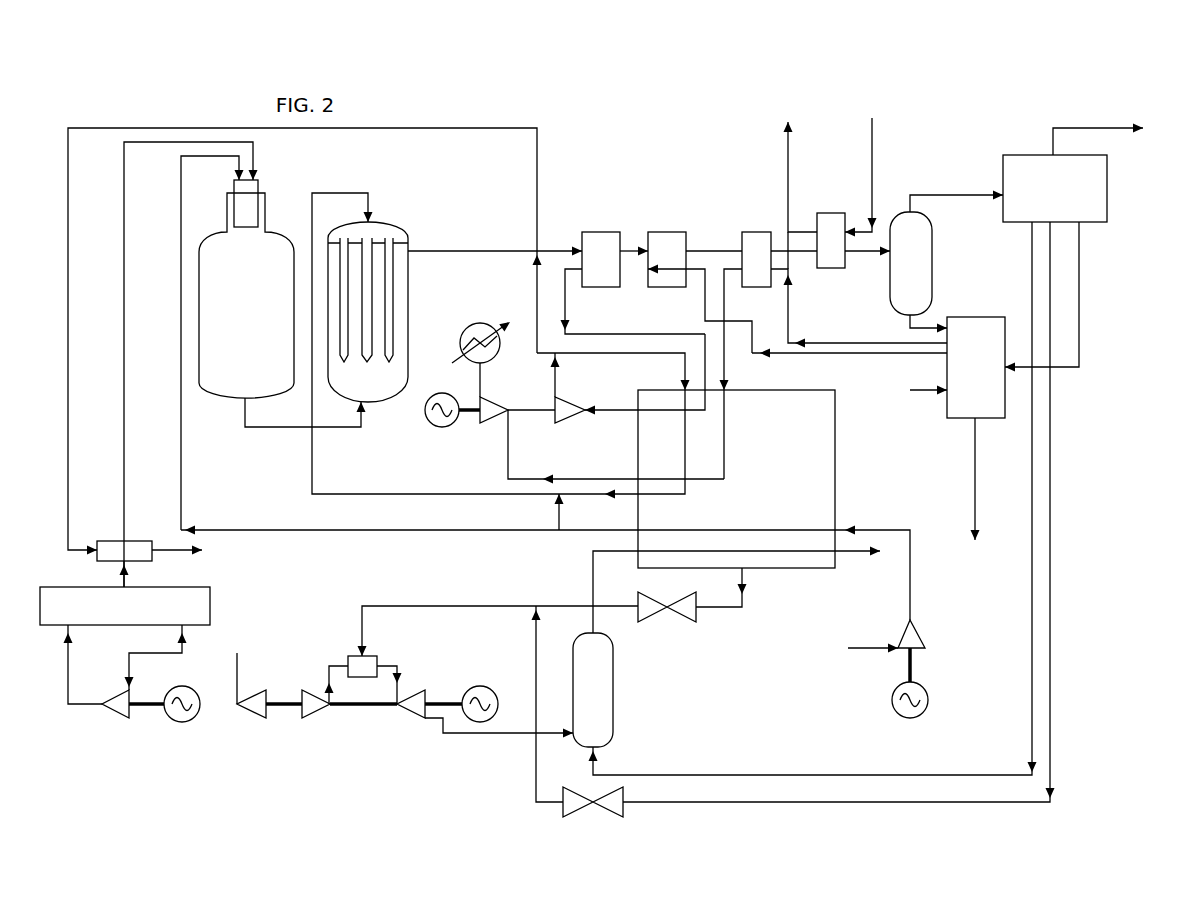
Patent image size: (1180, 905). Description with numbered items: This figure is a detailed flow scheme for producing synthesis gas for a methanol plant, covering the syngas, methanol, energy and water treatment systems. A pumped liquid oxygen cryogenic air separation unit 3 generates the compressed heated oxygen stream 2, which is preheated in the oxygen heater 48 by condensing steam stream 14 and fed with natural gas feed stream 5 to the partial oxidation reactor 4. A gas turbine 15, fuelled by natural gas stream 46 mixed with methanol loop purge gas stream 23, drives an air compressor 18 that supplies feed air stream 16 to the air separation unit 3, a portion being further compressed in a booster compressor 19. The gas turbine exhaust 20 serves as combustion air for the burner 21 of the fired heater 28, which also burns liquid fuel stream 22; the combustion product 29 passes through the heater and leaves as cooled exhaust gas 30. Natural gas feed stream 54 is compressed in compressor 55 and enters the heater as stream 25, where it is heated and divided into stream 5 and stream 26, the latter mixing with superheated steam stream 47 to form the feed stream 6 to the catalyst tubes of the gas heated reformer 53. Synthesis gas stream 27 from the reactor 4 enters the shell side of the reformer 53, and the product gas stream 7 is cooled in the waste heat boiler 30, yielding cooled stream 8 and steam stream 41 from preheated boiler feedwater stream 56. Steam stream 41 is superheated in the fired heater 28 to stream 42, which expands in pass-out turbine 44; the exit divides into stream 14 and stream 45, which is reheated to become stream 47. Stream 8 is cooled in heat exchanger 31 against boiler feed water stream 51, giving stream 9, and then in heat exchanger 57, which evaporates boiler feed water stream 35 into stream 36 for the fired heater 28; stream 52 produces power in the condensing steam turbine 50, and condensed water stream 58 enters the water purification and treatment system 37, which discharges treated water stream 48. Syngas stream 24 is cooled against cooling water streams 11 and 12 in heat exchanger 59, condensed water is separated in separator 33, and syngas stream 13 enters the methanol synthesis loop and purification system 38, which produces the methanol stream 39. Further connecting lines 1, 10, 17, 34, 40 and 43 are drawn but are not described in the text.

The feed line to separator 1 is at (122, 580).
The compressed heated oxygen stream 2 is at (124, 322).
The pumped liquid oxygen cryogenic air separation unit 3 is at (210, 607).
The partial oxidation reactor 4 is at (237, 329).
The natural gas feed stream 5 is at (183, 488).
The combined feed stream 6 is at (343, 193).
The product gas stream 7 is at (565, 250).
The cooled syngas stream 8 is at (628, 250).
The syngas stream 9 is at (700, 250).
The line to separator vessel 10 is at (867, 252).
The cooling water stream 11 is at (875, 150).
The heated cooling water stream 12 is at (788, 132).
The syngas stream 13 is at (960, 195).
The condensing steam stream 14 is at (175, 128).
The gas turbine 15 is at (362, 706).
The feed air stream 16 is at (185, 651).
The feed line 17 is at (78, 705).
The air compressor 18 is at (250, 715).
The booster compressor 19 is at (115, 715).
The gas turbine exhaust 20 is at (488, 735).
The fired heater burner 21 is at (582, 702).
The combustible liquid fuel stream 22 is at (812, 774).
The methanol loop purge gas stream 23 is at (828, 803).
The syngas stream 24 is at (788, 236).
The compressed natural gas stream 25 is at (886, 530).
The natural gas stream 26 is at (556, 512).
The synthesis gas stream 27 is at (280, 430).
The fired heater 28 is at (767, 474).
The combustion product 29 is at (600, 552).
The waste heat boiler 30 is at (598, 232).
The heat exchanger 31 is at (670, 232).
The water separator 33 is at (899, 275).
The liquid line 34 is at (930, 325).
The boiler feed water stream 35 is at (840, 342).
The evaporated boiler feed water stream 36 is at (726, 366).
The water purification and treatment system 37 is at (964, 377).
The methanol synthesis loop and purification system 38 is at (1042, 200).
The methanol product stream 39 is at (1093, 128).
The line to unit 40 is at (1080, 298).
The steam stream 41 is at (567, 305).
The superheated steam stream 42 is at (628, 414).
The compressor outlet line 43 is at (557, 368).
The pass-out turbine 44 is at (572, 420).
The steam stream 45 is at (610, 356).
The gas turbine fuel stream 46 is at (445, 607).
The superheated steam stream 47 is at (615, 498).
The oxygen heater 48 is at (118, 541).
The condensing steam turbine 50 is at (490, 398).
The boiler feed water stream 51 is at (863, 355).
The steam stream 52 is at (508, 450).
The gas heated catalytic reformer 53 is at (385, 223).
The natural gas feed stream 54 is at (870, 650).
The compressor 55 is at (918, 628).
The preheated boiler feedwater stream 56 is at (655, 275).
The heat exchanger 57 is at (756, 232).
The condensed water stream 58 is at (935, 392).
The heat exchanger 59 is at (830, 213).